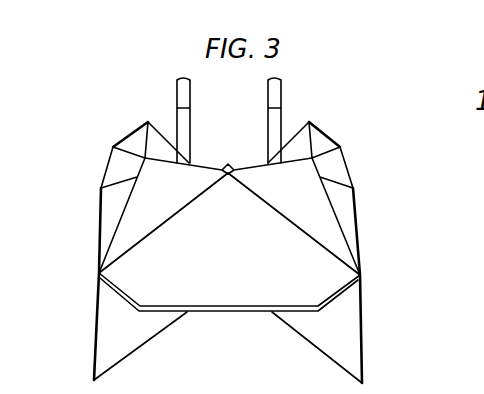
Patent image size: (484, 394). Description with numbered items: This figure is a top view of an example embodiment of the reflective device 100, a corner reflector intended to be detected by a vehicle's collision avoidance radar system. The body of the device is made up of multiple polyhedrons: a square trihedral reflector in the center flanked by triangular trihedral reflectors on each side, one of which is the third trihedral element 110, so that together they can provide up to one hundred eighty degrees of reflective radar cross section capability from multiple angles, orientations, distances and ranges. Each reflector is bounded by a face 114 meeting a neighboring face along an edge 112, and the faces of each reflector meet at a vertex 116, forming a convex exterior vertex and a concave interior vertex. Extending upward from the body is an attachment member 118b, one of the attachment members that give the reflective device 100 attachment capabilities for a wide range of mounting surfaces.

The reflective device 100 is at (389, 252).
The third trihedral element 110 is at (97, 150).
The attachment member 118b is at (282, 99).
The edge 112 is at (97, 318).
The face 114 is at (128, 339).
The vertex 116 is at (229, 333).